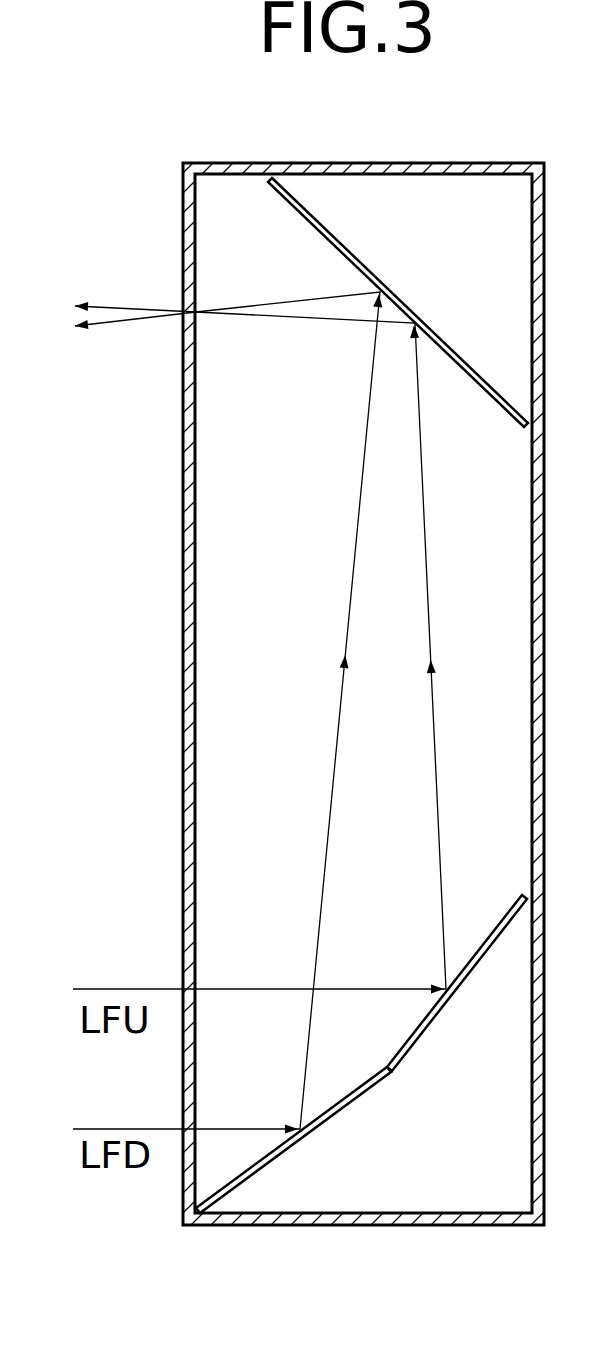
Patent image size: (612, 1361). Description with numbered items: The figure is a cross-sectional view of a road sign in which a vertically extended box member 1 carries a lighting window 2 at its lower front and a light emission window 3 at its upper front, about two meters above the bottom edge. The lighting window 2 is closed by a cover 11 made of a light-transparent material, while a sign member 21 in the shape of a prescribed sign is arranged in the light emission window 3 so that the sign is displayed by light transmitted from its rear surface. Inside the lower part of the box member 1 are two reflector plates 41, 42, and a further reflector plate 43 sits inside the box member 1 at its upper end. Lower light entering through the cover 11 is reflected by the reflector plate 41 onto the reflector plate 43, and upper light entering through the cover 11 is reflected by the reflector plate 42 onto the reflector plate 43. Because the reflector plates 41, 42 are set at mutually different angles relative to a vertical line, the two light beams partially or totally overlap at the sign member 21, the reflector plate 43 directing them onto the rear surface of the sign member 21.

The box member 1 is at (478, 163).
The sign member 21 is at (183, 242).
The light emission window 3 is at (182, 420).
The cover 11 is at (180, 962).
The lighting window 2 is at (182, 1188).
The reflector plate 43 is at (468, 341).
The reflector plate 42 is at (456, 995).
The reflector plate 41 is at (372, 1094).